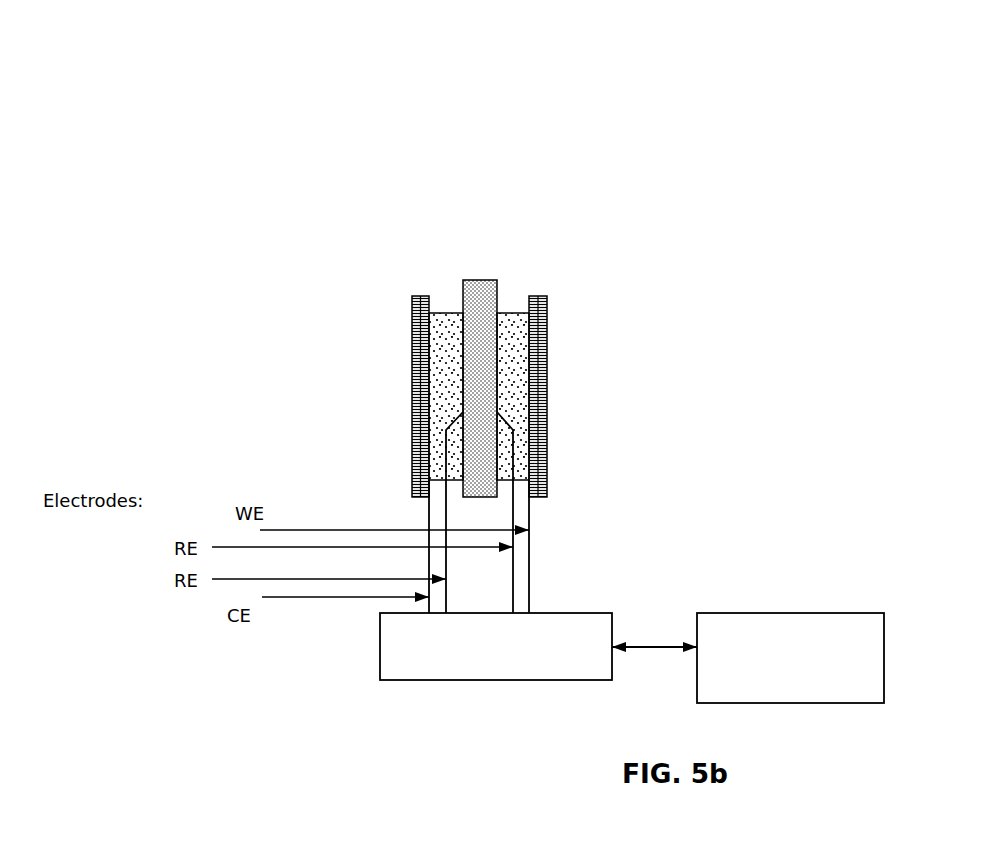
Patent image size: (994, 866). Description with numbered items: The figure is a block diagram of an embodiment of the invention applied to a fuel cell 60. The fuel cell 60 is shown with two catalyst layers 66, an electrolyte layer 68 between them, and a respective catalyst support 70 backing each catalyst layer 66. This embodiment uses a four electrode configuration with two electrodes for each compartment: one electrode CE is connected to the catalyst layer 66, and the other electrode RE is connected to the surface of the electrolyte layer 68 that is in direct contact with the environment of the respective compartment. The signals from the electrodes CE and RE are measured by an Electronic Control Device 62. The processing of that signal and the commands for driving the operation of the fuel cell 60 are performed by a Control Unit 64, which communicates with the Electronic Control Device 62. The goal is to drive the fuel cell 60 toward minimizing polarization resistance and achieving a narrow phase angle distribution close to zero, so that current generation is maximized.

The fuel cell 60 is at (494, 315).
The Electronic Control Device 62 is at (496, 646).
The Control Unit 64 is at (790, 658).
The catalyst layer 66 is at (513, 343).
The electrolyte layer 68 is at (483, 269).
The catalyst support 70 is at (778, 102).